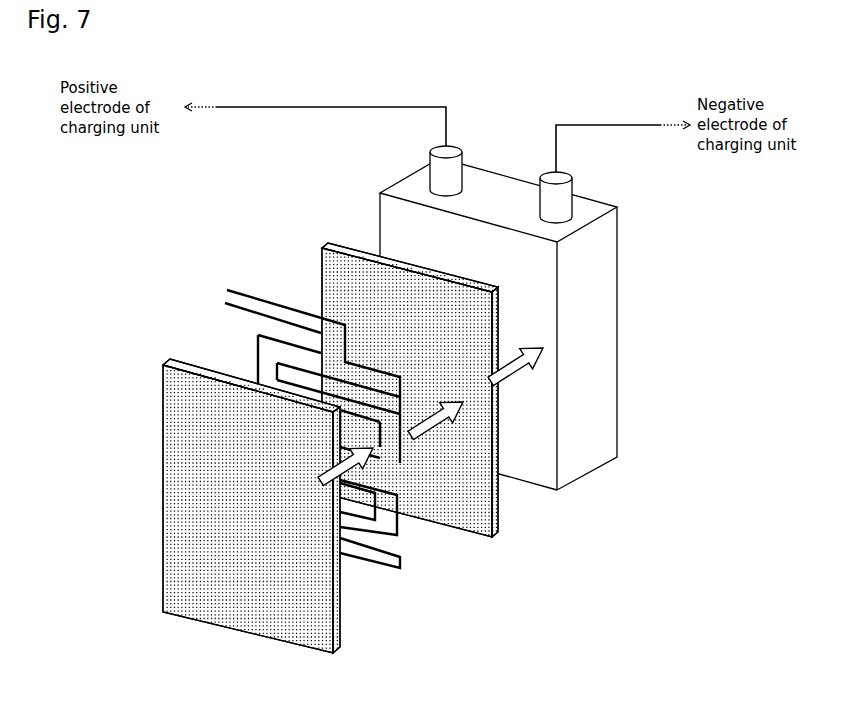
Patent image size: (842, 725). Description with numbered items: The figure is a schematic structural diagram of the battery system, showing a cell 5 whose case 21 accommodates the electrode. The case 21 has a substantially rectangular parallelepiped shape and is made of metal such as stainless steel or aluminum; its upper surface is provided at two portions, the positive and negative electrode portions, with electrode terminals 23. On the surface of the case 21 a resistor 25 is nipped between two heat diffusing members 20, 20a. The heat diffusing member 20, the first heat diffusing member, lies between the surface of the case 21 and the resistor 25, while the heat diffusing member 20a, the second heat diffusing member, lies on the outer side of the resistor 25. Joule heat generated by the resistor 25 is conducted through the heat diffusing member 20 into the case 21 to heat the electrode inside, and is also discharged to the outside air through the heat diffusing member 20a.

The cell 5 is at (555, 324).
The case 21 is at (617, 271).
The electrode terminals 23 is at (463, 154).
The heat diffusing member 20 is at (472, 532).
The heat diffusing member 20a is at (308, 630).
The resistor 25 is at (402, 559).